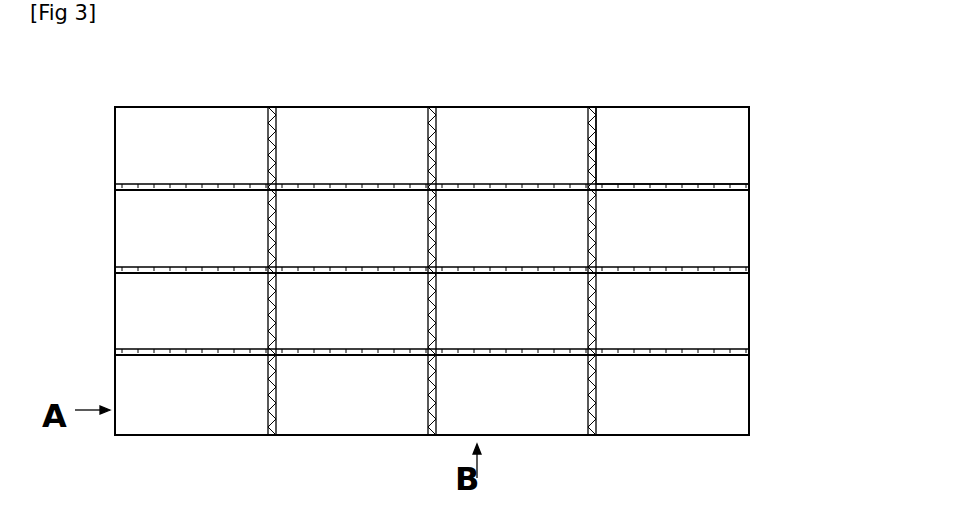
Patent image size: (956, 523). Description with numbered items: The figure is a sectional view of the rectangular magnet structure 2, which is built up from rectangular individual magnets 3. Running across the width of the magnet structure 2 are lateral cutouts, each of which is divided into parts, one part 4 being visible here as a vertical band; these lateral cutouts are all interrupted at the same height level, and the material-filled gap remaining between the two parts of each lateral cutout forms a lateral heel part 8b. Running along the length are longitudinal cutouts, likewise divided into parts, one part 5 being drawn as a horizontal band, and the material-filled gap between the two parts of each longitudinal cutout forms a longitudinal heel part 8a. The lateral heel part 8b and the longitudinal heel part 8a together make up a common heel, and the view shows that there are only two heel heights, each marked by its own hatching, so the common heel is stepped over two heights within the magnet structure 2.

The magnet structure 2 is at (762, 225).
The individual magnet 3 is at (722, 154).
The lateral cutout part 4 is at (268, 395).
The longitudinal cutout part 5 is at (187, 183).
The longitudinal heel part 8a is at (122, 187).
The lateral heel part 8b is at (276, 150).